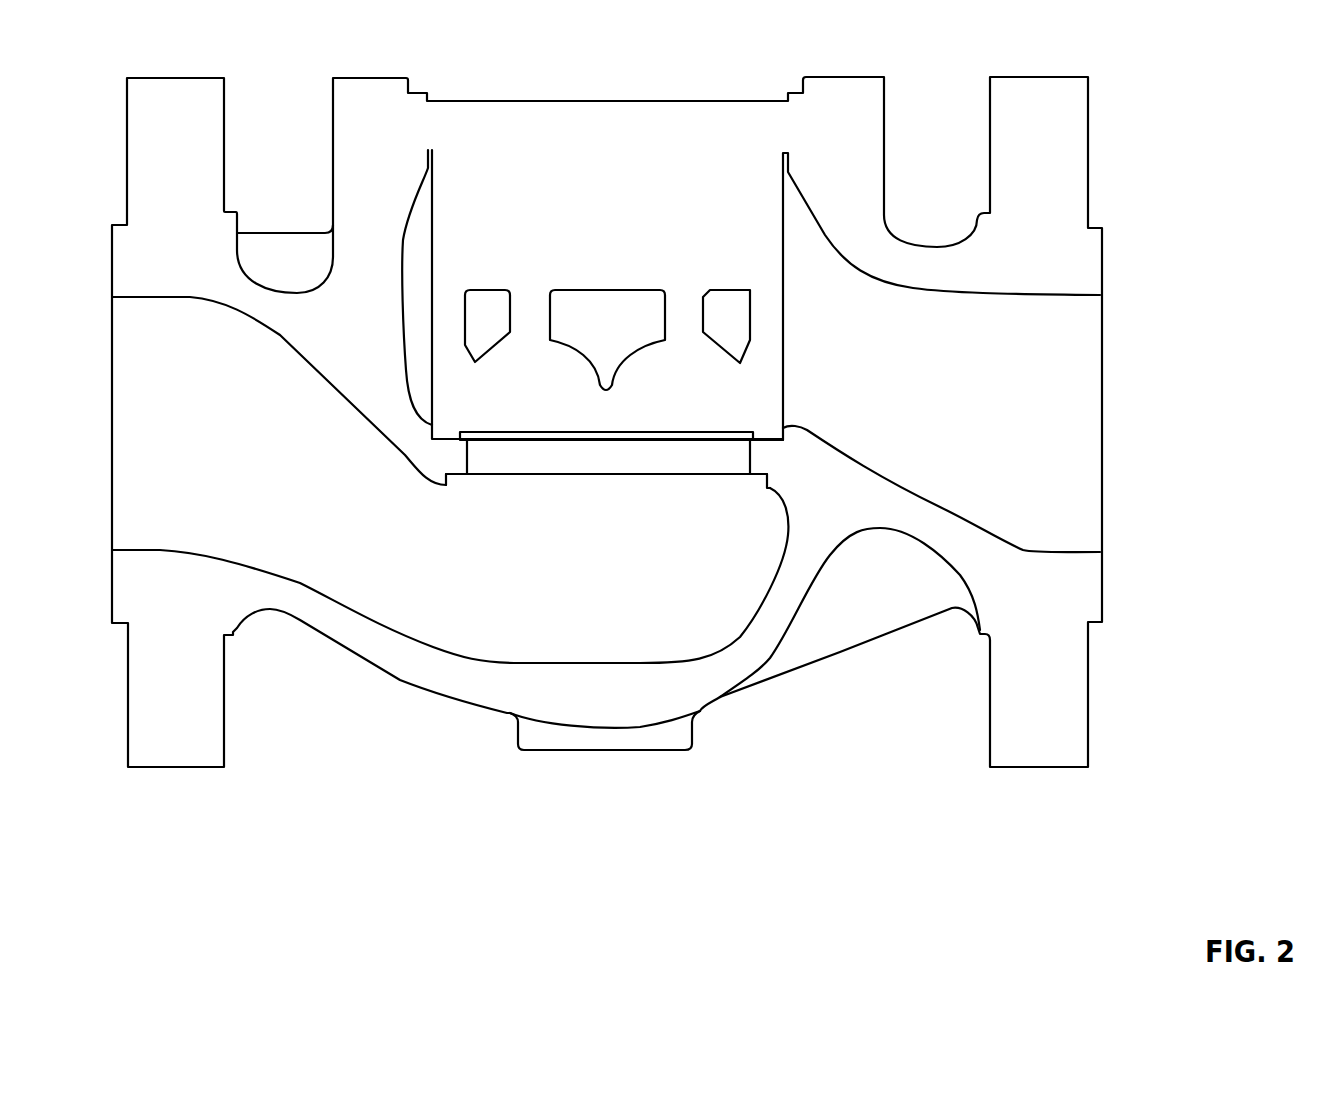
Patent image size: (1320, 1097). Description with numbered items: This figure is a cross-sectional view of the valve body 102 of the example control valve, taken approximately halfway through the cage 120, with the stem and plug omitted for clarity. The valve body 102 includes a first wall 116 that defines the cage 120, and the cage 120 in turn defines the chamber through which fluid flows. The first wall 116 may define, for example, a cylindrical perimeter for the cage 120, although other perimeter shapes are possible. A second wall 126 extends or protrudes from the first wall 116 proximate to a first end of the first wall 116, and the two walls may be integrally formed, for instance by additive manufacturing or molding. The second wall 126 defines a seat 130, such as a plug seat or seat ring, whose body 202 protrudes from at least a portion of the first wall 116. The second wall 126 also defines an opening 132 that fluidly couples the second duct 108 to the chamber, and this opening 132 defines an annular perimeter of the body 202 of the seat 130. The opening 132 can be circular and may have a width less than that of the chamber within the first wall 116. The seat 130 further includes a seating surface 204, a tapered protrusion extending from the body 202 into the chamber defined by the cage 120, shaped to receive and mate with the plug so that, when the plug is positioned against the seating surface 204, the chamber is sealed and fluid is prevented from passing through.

The valve body 102 is at (1060, 78).
The second duct 108 is at (742, 326).
The first wall 116 is at (432, 338).
The cage 120 is at (432, 268).
The second wall 126 is at (762, 477).
The seat 130 is at (770, 440).
The opening 132 is at (608, 464).
The body of the seat 202 is at (470, 451).
The seating surface 204 is at (750, 434).